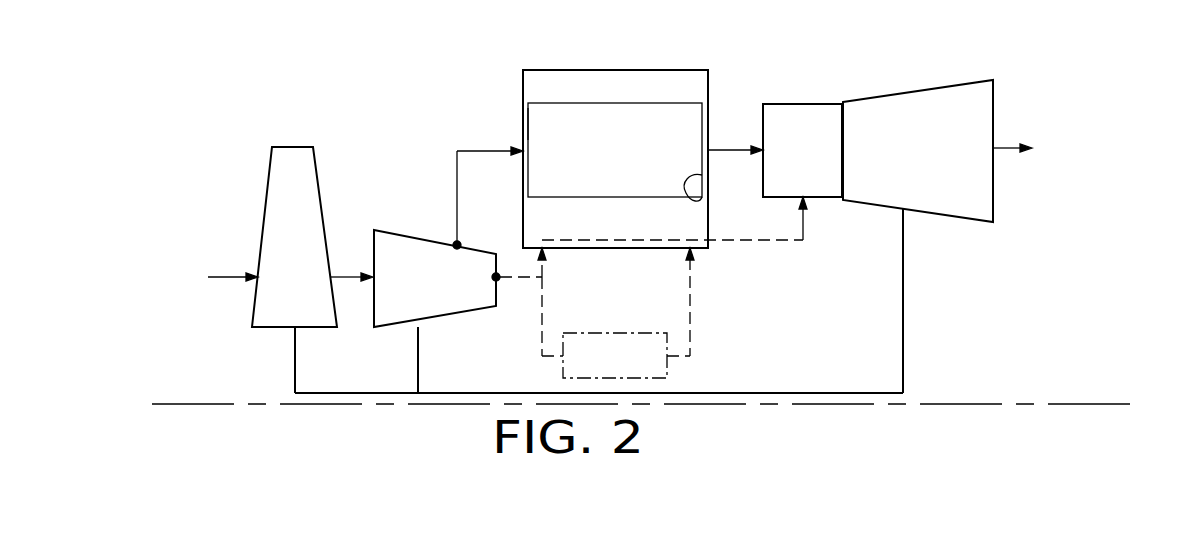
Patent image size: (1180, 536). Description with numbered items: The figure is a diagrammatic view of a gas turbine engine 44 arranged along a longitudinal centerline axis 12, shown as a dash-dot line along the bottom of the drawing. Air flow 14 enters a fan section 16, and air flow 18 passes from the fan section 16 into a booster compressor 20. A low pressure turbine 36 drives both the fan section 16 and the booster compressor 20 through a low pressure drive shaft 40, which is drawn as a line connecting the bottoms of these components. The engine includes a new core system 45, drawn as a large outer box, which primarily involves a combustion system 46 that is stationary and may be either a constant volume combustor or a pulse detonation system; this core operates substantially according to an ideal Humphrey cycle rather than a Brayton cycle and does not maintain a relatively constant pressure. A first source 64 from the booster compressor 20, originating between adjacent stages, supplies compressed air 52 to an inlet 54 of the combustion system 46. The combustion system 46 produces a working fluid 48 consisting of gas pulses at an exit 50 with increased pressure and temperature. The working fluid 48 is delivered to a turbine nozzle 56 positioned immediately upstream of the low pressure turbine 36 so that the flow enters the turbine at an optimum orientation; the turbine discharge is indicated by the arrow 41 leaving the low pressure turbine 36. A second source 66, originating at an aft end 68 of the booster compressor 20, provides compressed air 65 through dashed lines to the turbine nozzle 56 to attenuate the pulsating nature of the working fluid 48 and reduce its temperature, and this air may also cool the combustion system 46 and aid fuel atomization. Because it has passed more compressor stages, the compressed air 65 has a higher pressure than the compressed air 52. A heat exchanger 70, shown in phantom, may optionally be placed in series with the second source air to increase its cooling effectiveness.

The longitudinal centerline axis 12 is at (1068, 404).
The air flow 14 is at (223, 277).
The fan section 16 is at (307, 289).
The air flow 18 is at (338, 275).
The booster compressor 20 is at (433, 284).
The low pressure turbine 36 is at (935, 160).
The low pressure drive shaft 40 is at (903, 300).
The exhaust flow 41 is at (1002, 147).
The gas turbine engine 44 is at (948, 38).
The core system 45 is at (660, 64).
The combustion system 46 is at (626, 160).
The working fluid 48 is at (725, 148).
The exit 50 is at (688, 197).
The compressed air 52 is at (478, 149).
The inlet 54 is at (528, 122).
The turbine nozzle 56 is at (816, 160).
The first source 64 is at (457, 245).
The compressed air 65 is at (527, 283).
The second source 66 is at (497, 282).
The aft end 68 is at (498, 263).
The heat exchanger 70 is at (615, 333).